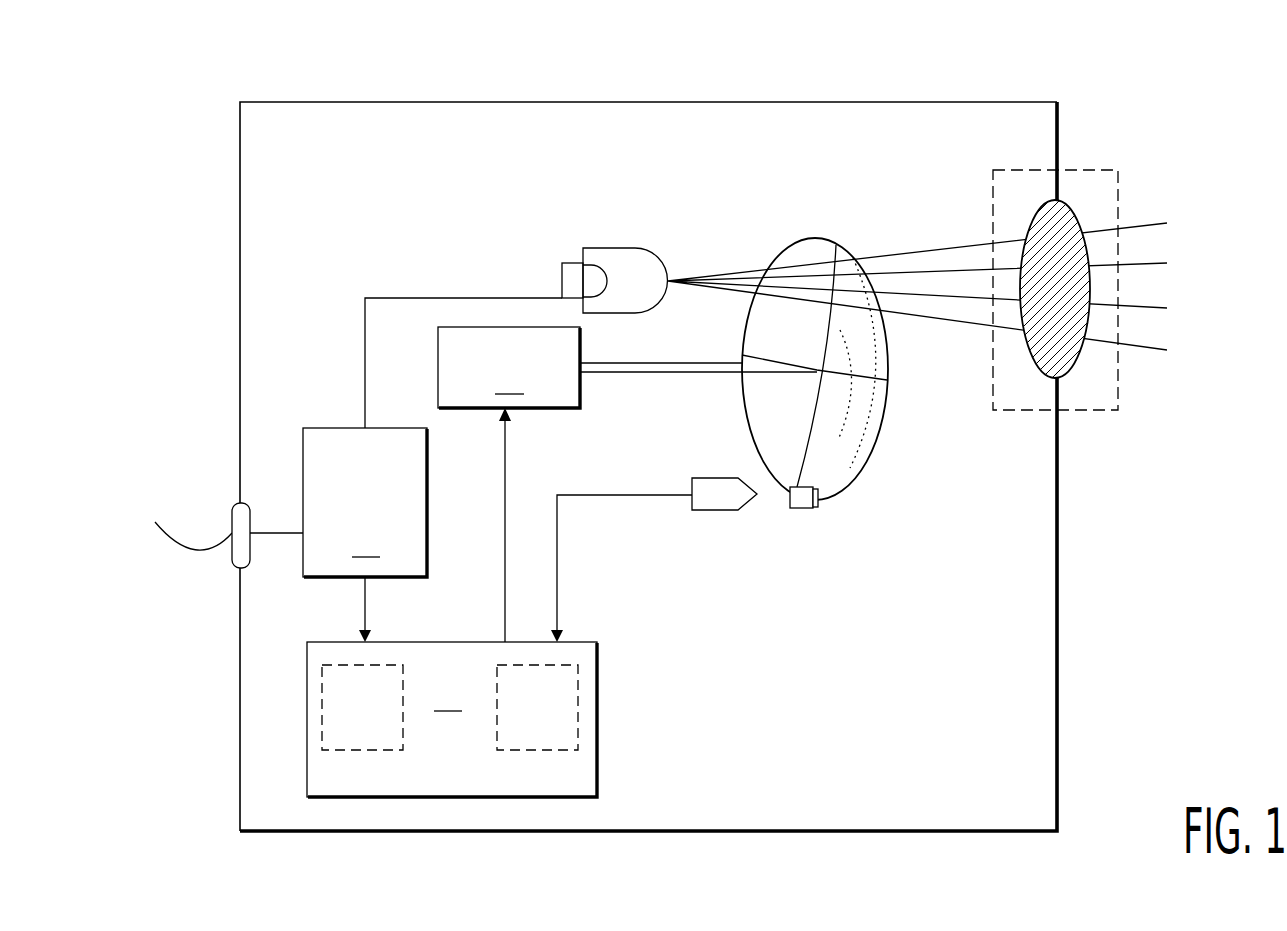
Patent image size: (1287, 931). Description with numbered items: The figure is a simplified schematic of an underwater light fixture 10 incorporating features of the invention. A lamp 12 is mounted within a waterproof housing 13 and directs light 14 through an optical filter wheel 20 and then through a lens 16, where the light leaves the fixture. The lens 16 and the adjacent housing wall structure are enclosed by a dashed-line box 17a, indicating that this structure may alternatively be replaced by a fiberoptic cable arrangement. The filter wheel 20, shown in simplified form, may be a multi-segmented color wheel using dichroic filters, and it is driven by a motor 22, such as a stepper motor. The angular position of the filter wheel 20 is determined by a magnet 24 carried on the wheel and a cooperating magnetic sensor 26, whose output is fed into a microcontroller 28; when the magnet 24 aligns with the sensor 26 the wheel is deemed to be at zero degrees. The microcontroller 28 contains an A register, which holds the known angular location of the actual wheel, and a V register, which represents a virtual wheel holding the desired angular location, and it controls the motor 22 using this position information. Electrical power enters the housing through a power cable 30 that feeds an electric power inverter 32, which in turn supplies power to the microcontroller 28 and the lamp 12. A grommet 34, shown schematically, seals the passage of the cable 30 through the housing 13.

The lighting device 10 is at (188, 104).
The lamp 12 is at (612, 248).
The waterproof housing 13 is at (239, 205).
The light 14 is at (728, 268).
The lens 16 is at (1069, 302).
The dashed-line box 17a is at (1110, 170).
The optical filter wheel 20 is at (834, 247).
The motor 22 is at (662, 367).
The magnet 24 is at (820, 502).
The magnetic sensor 26 is at (702, 511).
The microcontroller 28 is at (452, 719).
The power cable 30 is at (158, 526).
The electric power inverter 32 is at (365, 502).
The grommet 34 is at (237, 502).